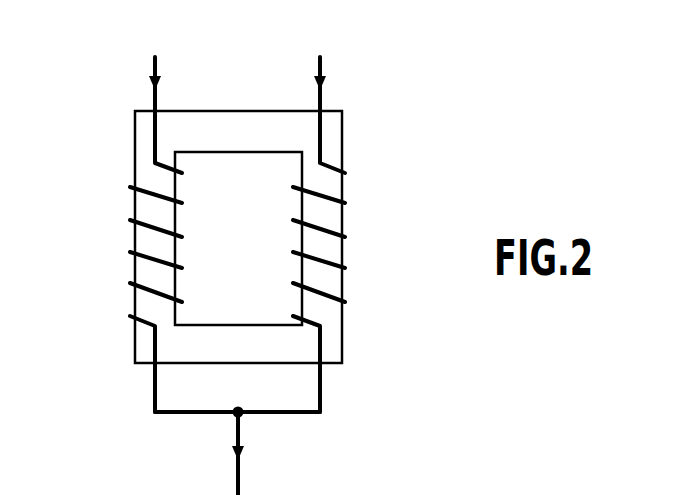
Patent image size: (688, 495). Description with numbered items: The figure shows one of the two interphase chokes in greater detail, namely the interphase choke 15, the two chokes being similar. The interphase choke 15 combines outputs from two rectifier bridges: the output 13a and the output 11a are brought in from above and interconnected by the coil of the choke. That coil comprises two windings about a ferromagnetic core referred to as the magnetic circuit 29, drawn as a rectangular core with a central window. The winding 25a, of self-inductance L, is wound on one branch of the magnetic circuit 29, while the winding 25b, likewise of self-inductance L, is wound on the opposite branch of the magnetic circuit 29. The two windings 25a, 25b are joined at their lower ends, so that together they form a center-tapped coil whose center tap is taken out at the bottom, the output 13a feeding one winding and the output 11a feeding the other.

The interphase choke 15 is at (355, 345).
The magnetic circuit 29 is at (235, 136).
The output 13a is at (155, 65).
The output 11a is at (322, 66).
The winding 25a is at (150, 230).
The winding 25b is at (323, 224).